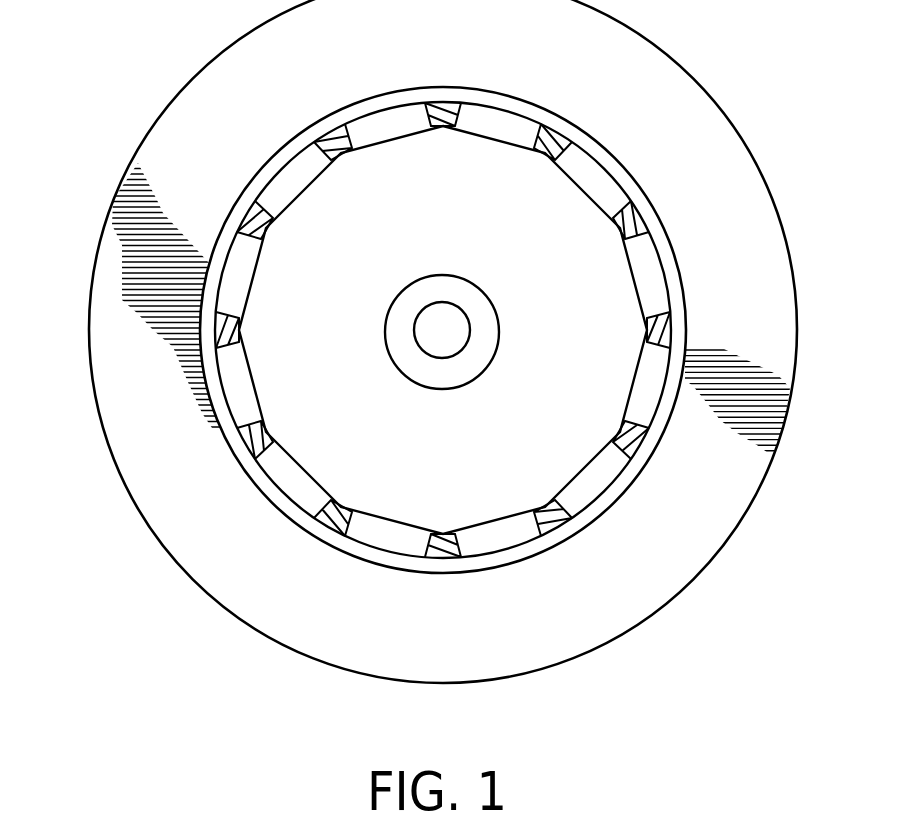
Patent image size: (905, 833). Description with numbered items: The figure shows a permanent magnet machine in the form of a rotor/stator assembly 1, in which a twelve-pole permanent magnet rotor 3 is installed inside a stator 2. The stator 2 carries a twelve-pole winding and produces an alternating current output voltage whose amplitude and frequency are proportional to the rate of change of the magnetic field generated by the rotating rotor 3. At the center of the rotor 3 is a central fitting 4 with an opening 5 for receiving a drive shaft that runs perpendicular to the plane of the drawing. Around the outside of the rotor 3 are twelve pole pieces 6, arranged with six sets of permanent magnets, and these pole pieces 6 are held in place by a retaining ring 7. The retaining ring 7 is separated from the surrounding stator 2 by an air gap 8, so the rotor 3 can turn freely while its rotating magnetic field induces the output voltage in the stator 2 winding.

The rotor/stator assembly 1 is at (411, 347).
The stator 2 is at (153, 452).
The rotor 3 is at (260, 362).
The central fitting 4 is at (412, 278).
The opening 5 is at (442, 330).
The pole pieces 6 is at (243, 266).
The retaining ring 7 is at (364, 330).
The air gap 8 is at (270, 137).